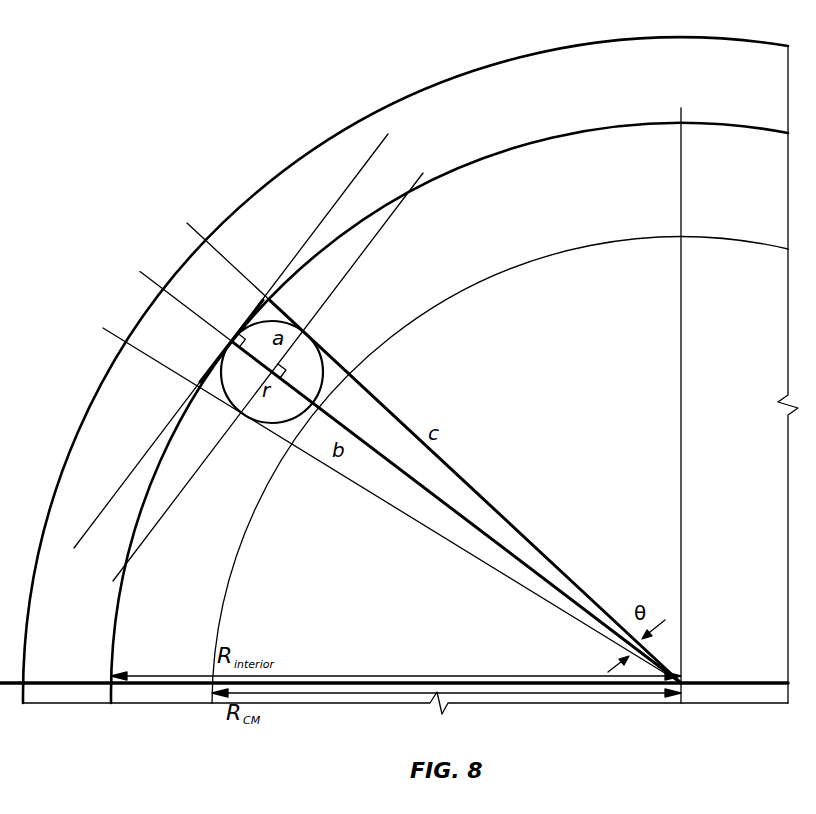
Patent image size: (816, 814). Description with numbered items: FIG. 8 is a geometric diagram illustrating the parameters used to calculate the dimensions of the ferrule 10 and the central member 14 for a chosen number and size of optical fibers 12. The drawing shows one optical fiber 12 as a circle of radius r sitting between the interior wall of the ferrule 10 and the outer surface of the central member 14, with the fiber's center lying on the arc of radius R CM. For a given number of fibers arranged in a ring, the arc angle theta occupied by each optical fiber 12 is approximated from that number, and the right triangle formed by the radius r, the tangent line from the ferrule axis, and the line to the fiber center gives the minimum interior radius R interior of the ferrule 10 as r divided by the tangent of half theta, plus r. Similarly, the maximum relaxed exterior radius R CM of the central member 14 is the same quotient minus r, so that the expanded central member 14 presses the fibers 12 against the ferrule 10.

The ferrule 10 is at (617, 36).
The optical fiber 12 is at (252, 322).
The central member 14 is at (706, 236).